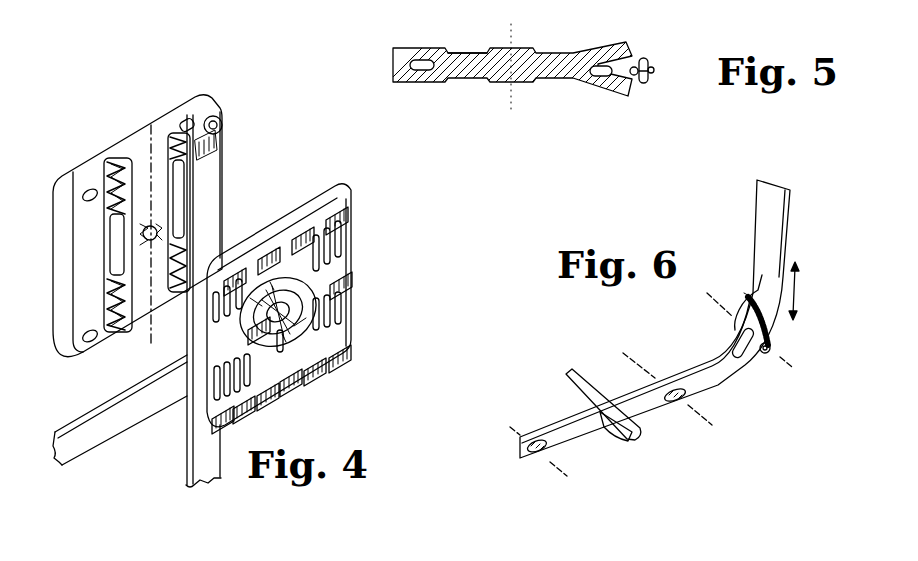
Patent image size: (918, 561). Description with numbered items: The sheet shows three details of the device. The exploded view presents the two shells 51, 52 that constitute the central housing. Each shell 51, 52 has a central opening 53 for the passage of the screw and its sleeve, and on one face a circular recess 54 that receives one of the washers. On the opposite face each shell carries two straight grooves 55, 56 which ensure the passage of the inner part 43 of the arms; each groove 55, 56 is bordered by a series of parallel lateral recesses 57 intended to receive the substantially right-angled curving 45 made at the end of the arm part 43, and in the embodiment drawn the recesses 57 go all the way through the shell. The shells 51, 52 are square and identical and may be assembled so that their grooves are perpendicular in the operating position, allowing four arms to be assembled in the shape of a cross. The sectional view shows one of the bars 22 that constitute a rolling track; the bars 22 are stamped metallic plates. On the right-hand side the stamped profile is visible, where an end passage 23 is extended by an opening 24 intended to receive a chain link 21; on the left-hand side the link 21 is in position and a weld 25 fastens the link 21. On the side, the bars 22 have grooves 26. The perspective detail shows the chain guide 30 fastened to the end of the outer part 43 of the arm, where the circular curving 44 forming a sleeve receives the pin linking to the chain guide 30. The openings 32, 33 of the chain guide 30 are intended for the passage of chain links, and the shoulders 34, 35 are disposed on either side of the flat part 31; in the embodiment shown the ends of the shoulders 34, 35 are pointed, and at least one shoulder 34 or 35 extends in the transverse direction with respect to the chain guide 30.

In FIG. 5, the chain link 21 is at (654, 70).
In FIG. 5, the bar 22 is at (517, 66).
In FIG. 5, the end passage 23 is at (635, 50).
In FIG. 5, the opening 24 is at (606, 70).
In FIG. 5, the weld 25 is at (402, 63).
In FIG. 5, the groove 26 is at (473, 86).
In FIG. 6, the chain guide 30 is at (660, 342).
In FIG. 6, the flat part 31 is at (548, 415).
In FIG. 6, the opening 32 is at (533, 452).
In FIG. 6, the opening 33 is at (683, 405).
In FIG. 6, the shoulder 34 is at (568, 372).
In FIG. 6, the shoulder 35 is at (620, 436).
In FIG. 4, the inner bent part of the arm 43 is at (197, 447).
In FIG. 6, the inner bent part of the arm 43 is at (777, 228).
In FIG. 6, the circular curving 44 is at (777, 340).
In FIG. 4, the right-angled curving 45 is at (206, 142).
In FIG. 4, the shell 51 is at (232, 84).
In FIG. 4, the shell 52 is at (350, 182).
In FIG. 4, the central opening 53 is at (157, 232).
In FIG. 4, the circular recess 54 is at (310, 318).
In FIG. 4, the straight groove 55 is at (120, 160).
In FIG. 4, the straight groove 56 is at (188, 120).
In FIG. 4, the lateral recess 57 is at (202, 130).